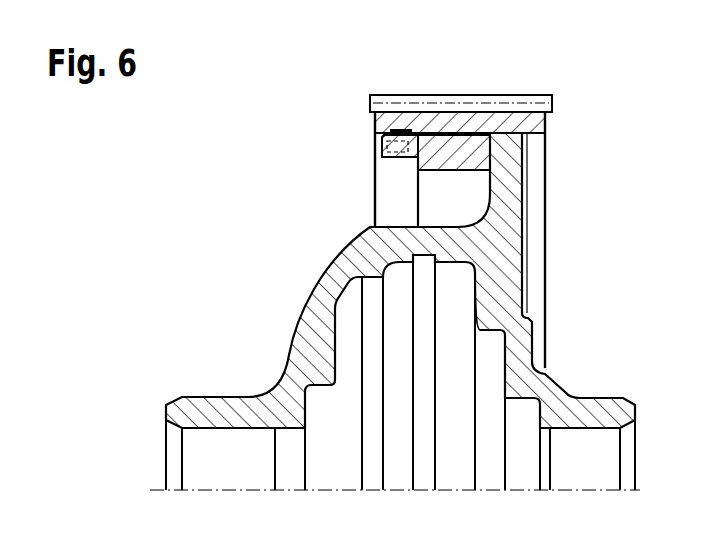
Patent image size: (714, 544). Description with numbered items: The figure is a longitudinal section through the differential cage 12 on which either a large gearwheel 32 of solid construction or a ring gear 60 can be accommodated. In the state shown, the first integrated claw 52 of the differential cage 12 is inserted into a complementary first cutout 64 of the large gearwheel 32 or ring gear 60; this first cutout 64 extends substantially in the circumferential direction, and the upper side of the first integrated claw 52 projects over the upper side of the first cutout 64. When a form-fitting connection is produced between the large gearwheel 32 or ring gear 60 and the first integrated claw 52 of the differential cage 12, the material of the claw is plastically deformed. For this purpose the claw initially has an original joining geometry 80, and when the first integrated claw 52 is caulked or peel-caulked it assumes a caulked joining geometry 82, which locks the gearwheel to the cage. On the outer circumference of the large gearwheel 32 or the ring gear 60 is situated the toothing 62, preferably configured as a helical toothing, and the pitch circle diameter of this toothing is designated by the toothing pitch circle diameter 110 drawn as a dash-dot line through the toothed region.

The differential cage 12 is at (228, 411).
The large gearwheel of solid construction 32 is at (514, 240).
The ring gear 60 is at (533, 189).
The first integrated claw 52 is at (453, 118).
The toothing 62 is at (530, 101).
The first cutout 64 is at (469, 122).
The original joining geometry 80 is at (398, 133).
The caulked joining geometry 82 is at (406, 157).
The toothing pitch circle diameter 110 is at (390, 101).